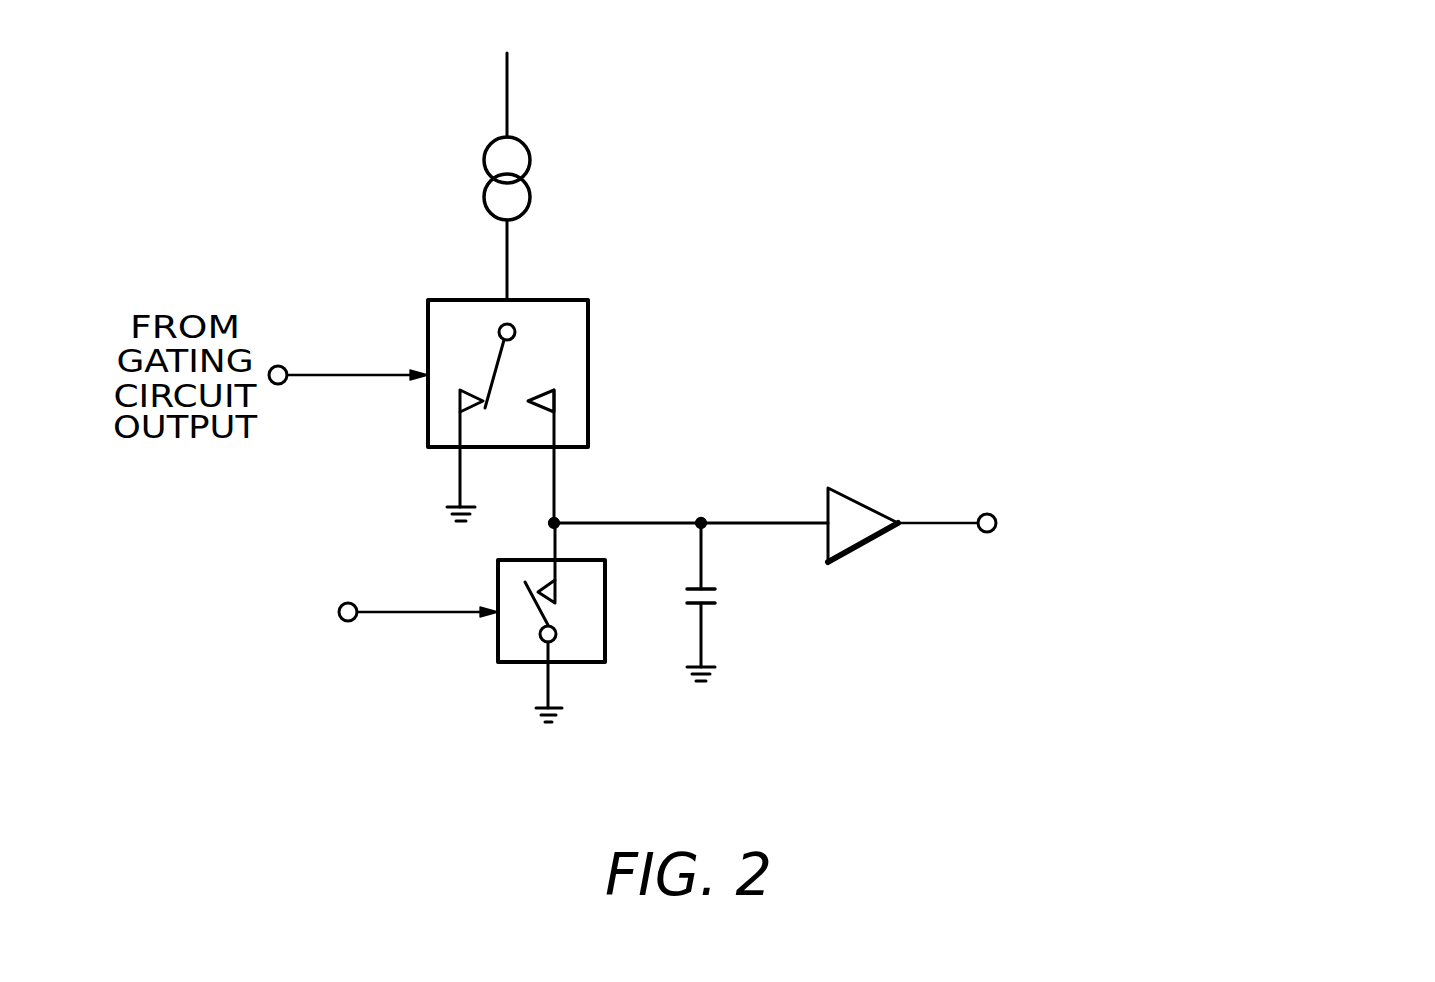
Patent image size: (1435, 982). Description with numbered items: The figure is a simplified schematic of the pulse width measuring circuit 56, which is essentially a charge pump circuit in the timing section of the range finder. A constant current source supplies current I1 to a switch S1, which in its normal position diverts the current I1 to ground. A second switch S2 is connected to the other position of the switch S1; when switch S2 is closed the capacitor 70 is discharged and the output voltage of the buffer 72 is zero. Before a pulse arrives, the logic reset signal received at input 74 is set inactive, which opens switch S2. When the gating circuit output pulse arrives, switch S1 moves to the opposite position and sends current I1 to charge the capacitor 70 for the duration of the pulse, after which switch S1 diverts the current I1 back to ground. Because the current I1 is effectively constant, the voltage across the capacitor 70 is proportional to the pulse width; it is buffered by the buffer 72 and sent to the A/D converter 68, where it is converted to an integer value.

The pulse width measuring circuit 56 is at (717, 355).
The capacitor 70 is at (707, 603).
The buffer 72 is at (855, 497).
The input 74 is at (347, 621).
The A/D converter 68 is at (1202, 528).
The switch S1 is at (462, 300).
The second switch S2 is at (498, 645).
The current I1 is at (552, 213).